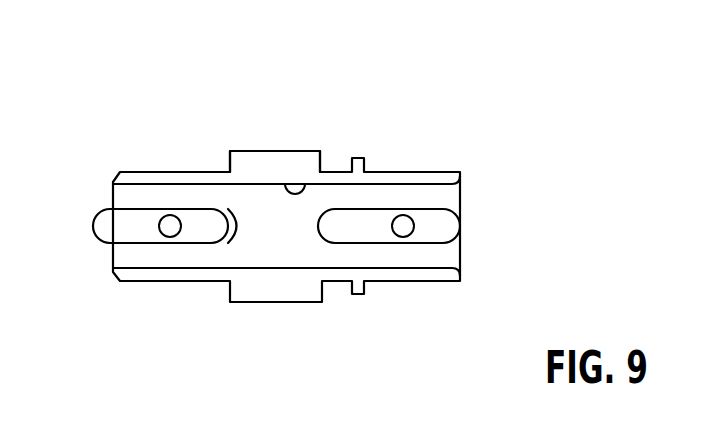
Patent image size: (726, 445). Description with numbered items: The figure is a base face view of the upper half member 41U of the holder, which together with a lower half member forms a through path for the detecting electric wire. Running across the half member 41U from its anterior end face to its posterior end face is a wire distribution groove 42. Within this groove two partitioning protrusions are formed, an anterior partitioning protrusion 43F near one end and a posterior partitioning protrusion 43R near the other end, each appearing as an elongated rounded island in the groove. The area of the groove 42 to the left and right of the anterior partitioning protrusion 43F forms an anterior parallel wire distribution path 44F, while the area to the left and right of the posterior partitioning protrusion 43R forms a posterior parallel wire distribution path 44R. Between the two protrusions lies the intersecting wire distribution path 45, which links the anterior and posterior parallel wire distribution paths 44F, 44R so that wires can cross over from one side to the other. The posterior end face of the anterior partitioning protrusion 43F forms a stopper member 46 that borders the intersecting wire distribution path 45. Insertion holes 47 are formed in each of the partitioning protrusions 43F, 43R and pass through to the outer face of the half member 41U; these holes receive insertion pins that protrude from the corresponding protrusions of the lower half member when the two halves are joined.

The upper half member 41U is at (258, 163).
The wire distribution groove 42 is at (301, 190).
The anterior partitioning protrusion 43F is at (127, 230).
The posterior partitioning protrusion 43R is at (432, 223).
The anterior parallel wire distribution path 44F is at (193, 260).
The posterior parallel wire distribution path 44R is at (358, 193).
The intersecting wire distribution path 45 is at (290, 250).
The stopper member 46 is at (222, 230).
The insertion holes 47 is at (403, 215).